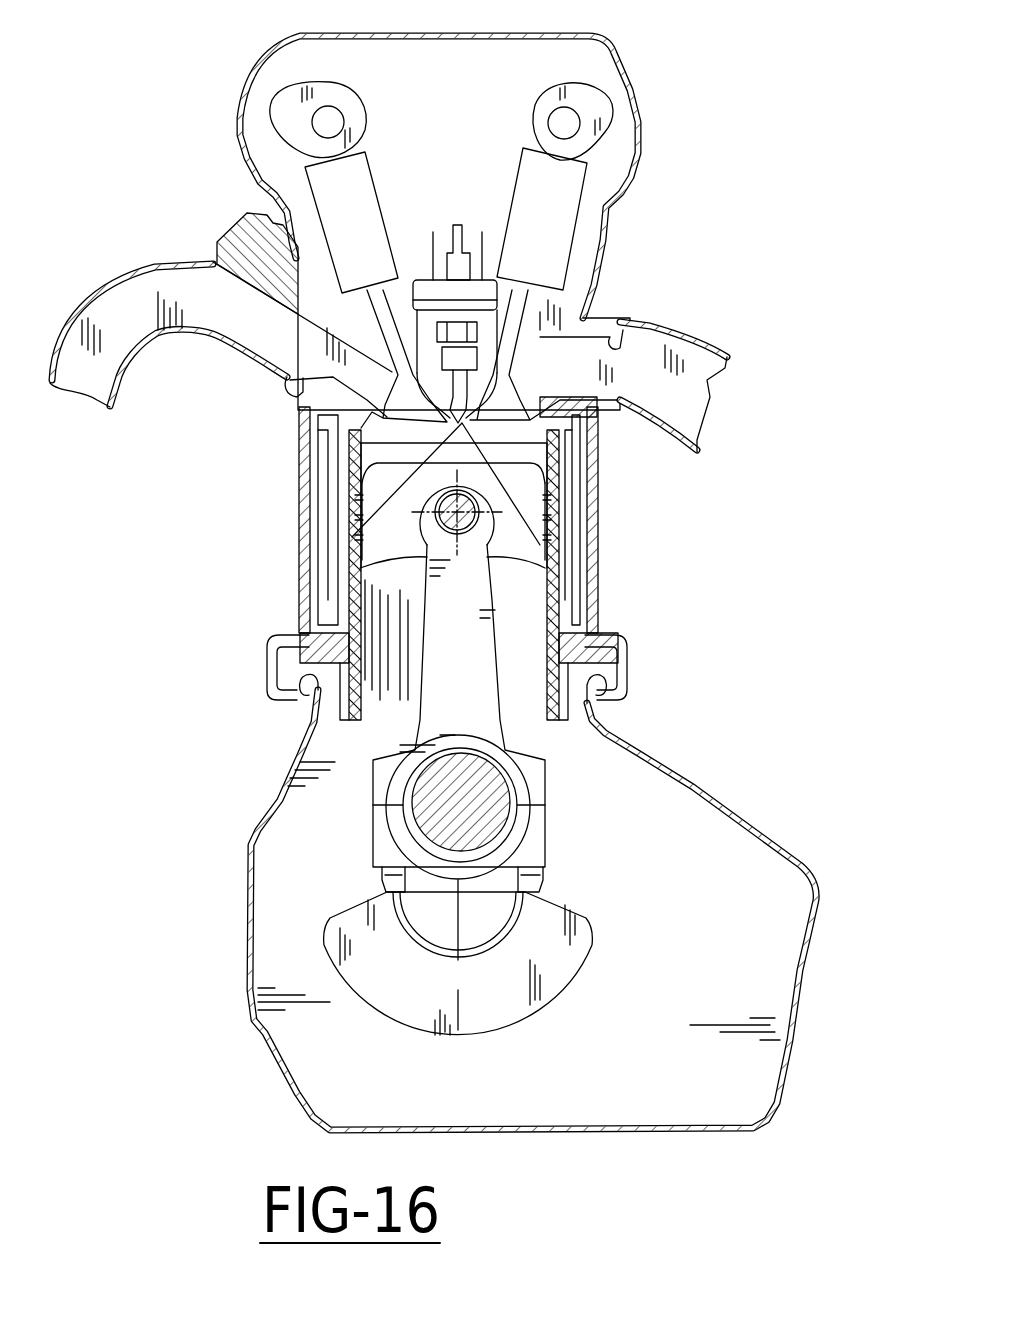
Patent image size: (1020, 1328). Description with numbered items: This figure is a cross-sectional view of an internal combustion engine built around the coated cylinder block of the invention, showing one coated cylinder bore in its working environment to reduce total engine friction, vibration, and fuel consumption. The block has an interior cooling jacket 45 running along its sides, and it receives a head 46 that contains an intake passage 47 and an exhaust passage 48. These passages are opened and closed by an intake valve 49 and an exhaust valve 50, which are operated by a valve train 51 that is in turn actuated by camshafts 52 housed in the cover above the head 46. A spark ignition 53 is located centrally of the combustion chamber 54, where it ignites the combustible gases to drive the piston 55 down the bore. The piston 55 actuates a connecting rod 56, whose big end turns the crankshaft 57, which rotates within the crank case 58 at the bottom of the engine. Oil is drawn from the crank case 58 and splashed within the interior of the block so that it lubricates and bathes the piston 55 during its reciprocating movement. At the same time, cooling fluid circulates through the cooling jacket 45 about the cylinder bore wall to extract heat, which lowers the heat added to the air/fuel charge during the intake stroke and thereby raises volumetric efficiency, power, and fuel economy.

The interior cooling jacket 45 is at (353, 507).
The head 46 is at (600, 333).
The intake passage 47 is at (297, 393).
The exhaust passage 48 is at (633, 322).
The intake valve 49 is at (377, 420).
The exhaust valve 50 is at (458, 428).
The valve train 51 is at (567, 183).
The camshaft 52 is at (293, 113).
The spark ignition 53 is at (358, 560).
The combustion chamber 54 is at (490, 515).
The piston 55 is at (515, 500).
The connecting rod 56 is at (477, 675).
The crankshaft 57 is at (493, 917).
The crank case 58 is at (773, 840).